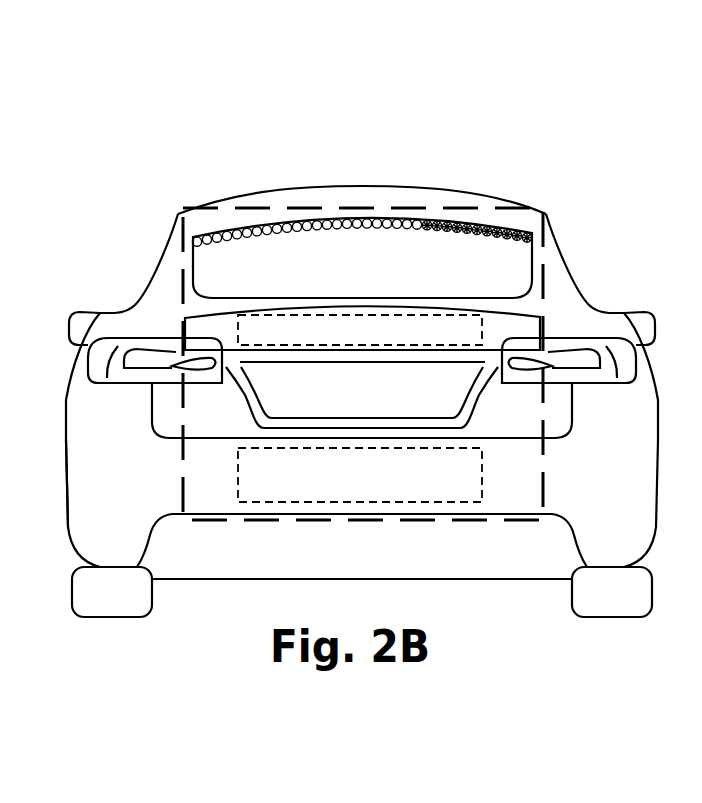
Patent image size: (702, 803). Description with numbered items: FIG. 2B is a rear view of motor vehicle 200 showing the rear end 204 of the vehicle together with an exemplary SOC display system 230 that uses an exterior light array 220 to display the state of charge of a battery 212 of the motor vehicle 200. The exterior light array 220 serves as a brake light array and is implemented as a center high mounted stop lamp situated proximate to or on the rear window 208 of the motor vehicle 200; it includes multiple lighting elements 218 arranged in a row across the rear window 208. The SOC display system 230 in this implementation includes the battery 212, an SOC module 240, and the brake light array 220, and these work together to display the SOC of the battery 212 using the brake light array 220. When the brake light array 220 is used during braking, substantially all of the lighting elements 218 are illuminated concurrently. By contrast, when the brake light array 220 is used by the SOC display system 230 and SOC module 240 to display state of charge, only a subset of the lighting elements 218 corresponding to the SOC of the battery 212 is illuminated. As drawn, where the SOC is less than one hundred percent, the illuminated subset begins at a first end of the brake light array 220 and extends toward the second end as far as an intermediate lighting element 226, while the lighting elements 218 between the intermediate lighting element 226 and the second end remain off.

The motor vehicle 200 is at (520, 163).
The rear end 204 is at (160, 337).
The rear window 208 is at (487, 281).
The battery 212 is at (423, 486).
The lighting elements 218 is at (240, 246).
The exterior light array 220 is at (361, 257).
The intermediate lighting element 226 is at (408, 243).
The SOC display system 230 is at (182, 487).
The SOC module 240 is at (457, 343).